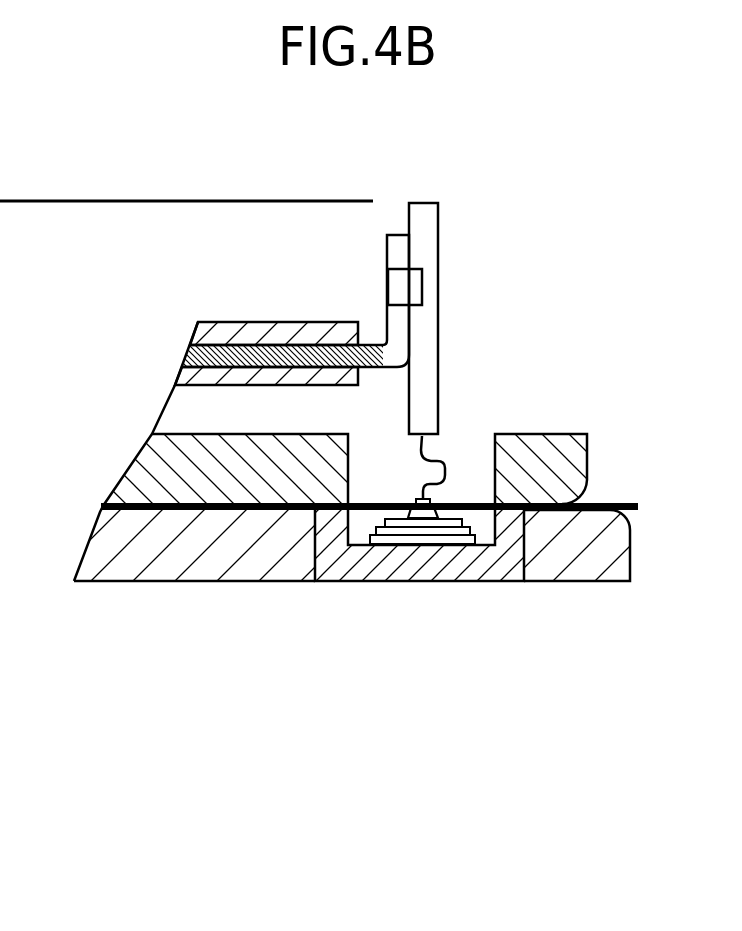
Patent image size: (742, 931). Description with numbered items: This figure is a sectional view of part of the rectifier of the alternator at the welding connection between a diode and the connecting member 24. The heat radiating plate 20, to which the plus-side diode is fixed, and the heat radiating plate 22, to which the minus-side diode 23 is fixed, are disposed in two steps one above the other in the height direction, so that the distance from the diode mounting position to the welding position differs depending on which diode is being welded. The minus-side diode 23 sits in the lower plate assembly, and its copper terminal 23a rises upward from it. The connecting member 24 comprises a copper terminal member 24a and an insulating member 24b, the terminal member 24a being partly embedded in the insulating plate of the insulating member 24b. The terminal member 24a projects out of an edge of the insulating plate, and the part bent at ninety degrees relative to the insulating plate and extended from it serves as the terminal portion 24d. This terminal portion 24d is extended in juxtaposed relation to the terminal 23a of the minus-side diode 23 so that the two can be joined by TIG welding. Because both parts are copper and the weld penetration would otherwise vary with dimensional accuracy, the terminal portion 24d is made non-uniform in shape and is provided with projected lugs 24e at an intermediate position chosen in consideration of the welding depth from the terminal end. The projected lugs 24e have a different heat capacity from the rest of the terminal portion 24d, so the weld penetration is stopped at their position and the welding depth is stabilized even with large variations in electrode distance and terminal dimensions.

The heat radiating plate 20 is at (530, 440).
The heat radiating plate 22 is at (622, 558).
The minus-side diode 23 is at (488, 578).
The terminal of the minus-side diode 23a is at (439, 233).
The connecting member 24 is at (218, 320).
The terminal member 24a is at (282, 348).
The insulating member 24b is at (195, 375).
The terminal portion 24d is at (387, 243).
The projected lugs 24e is at (417, 288).